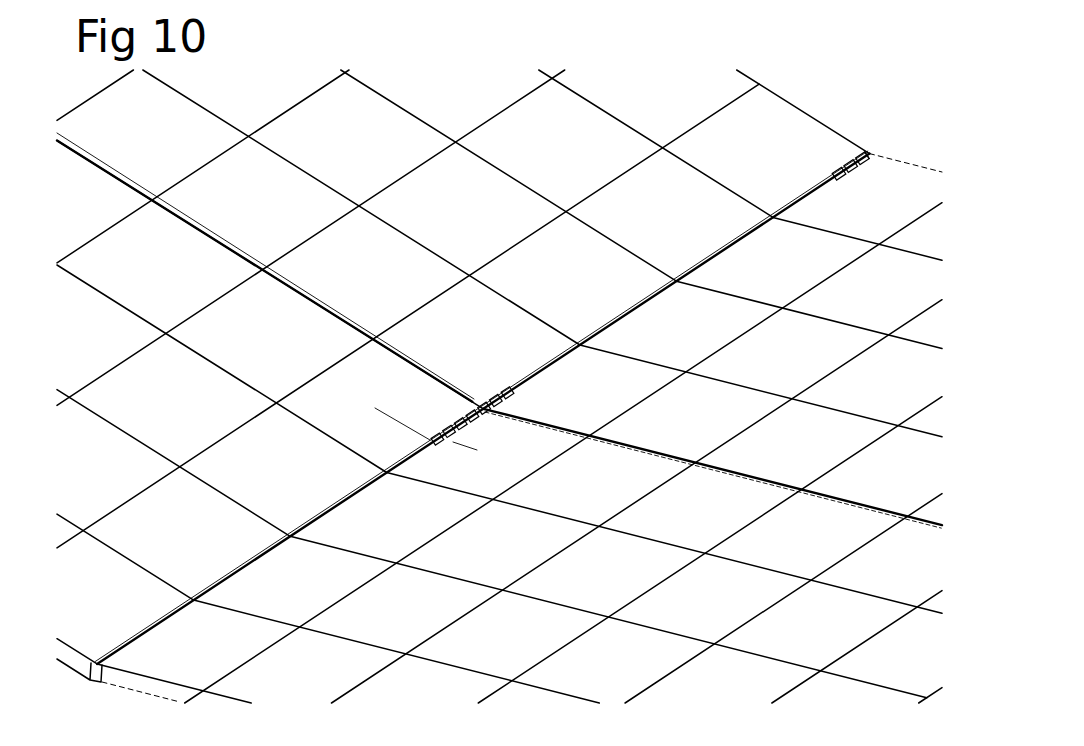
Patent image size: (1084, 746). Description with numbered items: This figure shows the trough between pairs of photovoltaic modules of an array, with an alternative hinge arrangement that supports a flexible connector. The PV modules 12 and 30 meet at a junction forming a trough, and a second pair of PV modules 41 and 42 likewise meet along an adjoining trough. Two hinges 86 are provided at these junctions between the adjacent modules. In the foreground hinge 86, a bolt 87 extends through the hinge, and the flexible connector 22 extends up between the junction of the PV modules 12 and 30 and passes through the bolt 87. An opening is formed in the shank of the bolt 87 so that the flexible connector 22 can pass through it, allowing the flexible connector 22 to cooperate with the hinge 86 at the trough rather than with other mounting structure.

The PV module 12 is at (315, 300).
The PV module 41 is at (714, 172).
The PV module 42 is at (850, 313).
The PV module 30 is at (540, 507).
The hinge 86 is at (508, 383).
The bolt 87 is at (432, 398).
The flexible connector 22 is at (425, 430).